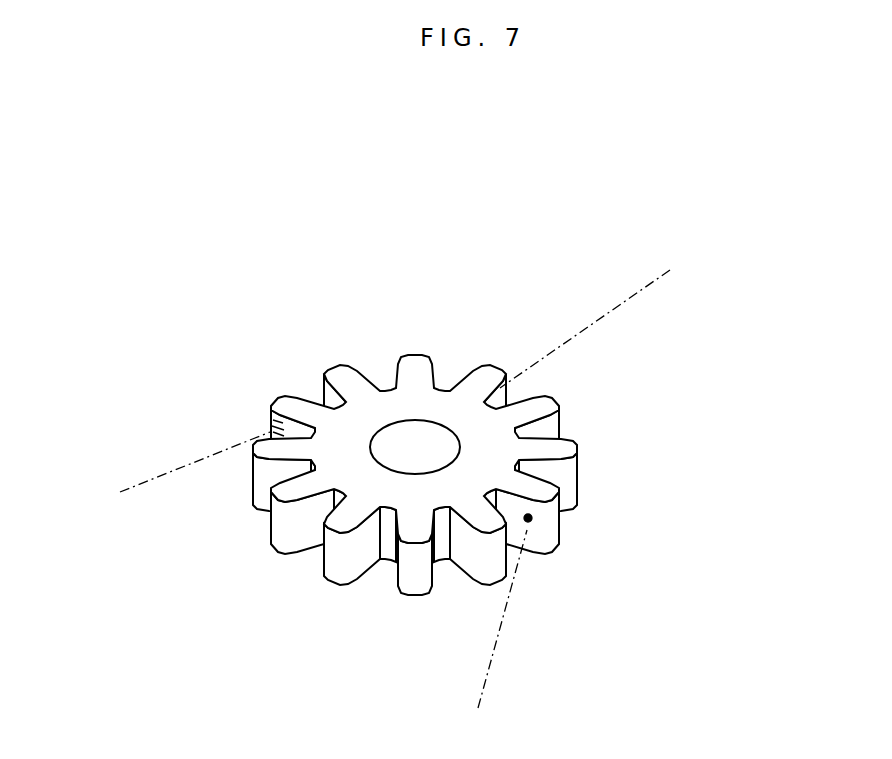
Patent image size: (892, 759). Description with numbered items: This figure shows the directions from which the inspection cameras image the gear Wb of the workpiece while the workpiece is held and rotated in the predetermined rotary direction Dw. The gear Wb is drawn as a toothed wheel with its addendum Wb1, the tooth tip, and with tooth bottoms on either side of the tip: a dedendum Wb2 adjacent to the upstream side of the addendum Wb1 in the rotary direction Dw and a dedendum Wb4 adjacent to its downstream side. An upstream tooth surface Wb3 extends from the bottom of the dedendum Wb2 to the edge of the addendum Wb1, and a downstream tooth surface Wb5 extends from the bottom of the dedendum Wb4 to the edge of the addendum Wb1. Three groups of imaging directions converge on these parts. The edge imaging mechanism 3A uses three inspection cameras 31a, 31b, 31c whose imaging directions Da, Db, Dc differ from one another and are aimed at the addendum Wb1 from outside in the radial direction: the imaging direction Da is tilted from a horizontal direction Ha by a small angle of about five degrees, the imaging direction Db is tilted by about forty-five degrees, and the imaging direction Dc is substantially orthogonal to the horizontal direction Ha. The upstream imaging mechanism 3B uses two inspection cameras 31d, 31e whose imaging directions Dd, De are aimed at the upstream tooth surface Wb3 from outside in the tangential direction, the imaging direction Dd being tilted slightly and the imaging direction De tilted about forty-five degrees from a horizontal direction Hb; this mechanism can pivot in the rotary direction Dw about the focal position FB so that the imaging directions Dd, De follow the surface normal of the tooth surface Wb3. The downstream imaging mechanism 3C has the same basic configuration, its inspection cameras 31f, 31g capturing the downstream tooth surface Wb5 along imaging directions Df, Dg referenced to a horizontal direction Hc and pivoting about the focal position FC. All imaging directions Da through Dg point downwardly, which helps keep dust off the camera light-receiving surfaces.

The edge imaging mechanism 3A is at (694, 212).
The upstream imaging mechanism 3B is at (192, 315).
The downstream imaging mechanism 3C is at (505, 674).
The inspection camera 31a is at (513, 372).
The inspection camera 31b is at (503, 370).
The inspection camera 31c is at (487, 358).
The inspection camera 31d is at (270, 430).
The inspection camera 31e is at (273, 427).
The inspection camera 31f is at (520, 528).
The inspection camera 31g is at (528, 522).
The gear Wb is at (413, 332).
The addendum Wb1 is at (268, 528).
The dedendum Wb2 is at (313, 538).
The upstream tooth surface Wb3 is at (287, 428).
The dedendum Wb4 is at (545, 465).
The downstream tooth surface Wb5 is at (548, 545).
The focal position FB is at (277, 425).
The focal position FC is at (527, 547).
The imaging direction Da is at (592, 291).
The imaging direction Db is at (562, 228).
The imaging direction Dc is at (503, 190).
The imaging direction Dd is at (192, 438).
The imaging direction De is at (209, 376).
The imaging direction Df is at (468, 628).
The imaging direction Dg is at (480, 580).
The rotary direction Dw is at (400, 394).
The horizontal direction Ha is at (623, 302).
The horizontal direction Hb is at (128, 493).
The horizontal direction Hc is at (497, 635).